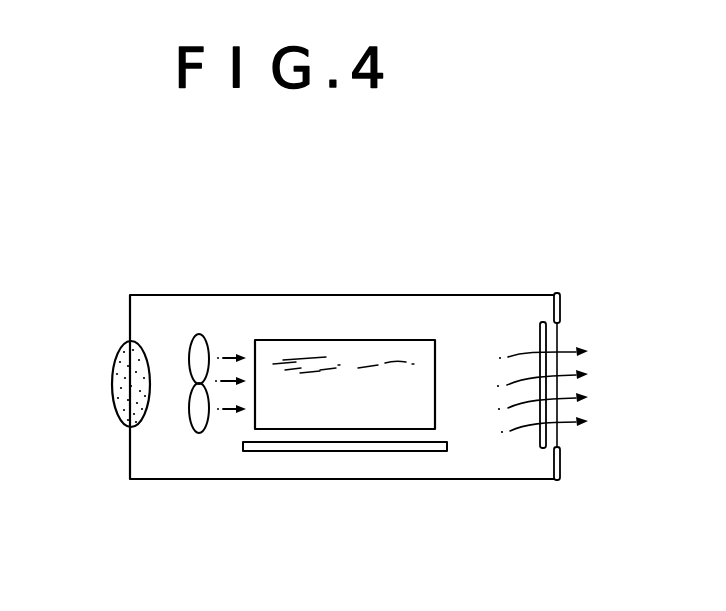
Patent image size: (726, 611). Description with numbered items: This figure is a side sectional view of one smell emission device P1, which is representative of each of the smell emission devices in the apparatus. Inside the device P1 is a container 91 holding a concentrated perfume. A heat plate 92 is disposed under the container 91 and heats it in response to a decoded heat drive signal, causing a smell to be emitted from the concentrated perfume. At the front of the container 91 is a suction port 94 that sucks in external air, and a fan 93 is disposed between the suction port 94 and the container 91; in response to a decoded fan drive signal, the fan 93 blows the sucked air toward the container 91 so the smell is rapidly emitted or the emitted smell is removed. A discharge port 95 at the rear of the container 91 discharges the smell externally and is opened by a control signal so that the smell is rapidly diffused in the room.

The smell emission device P1 is at (545, 276).
The container 91 is at (352, 345).
The heat plate 92 is at (370, 452).
The fan 93 is at (205, 334).
The suction port 94 is at (114, 388).
The discharge port 95 is at (548, 436).